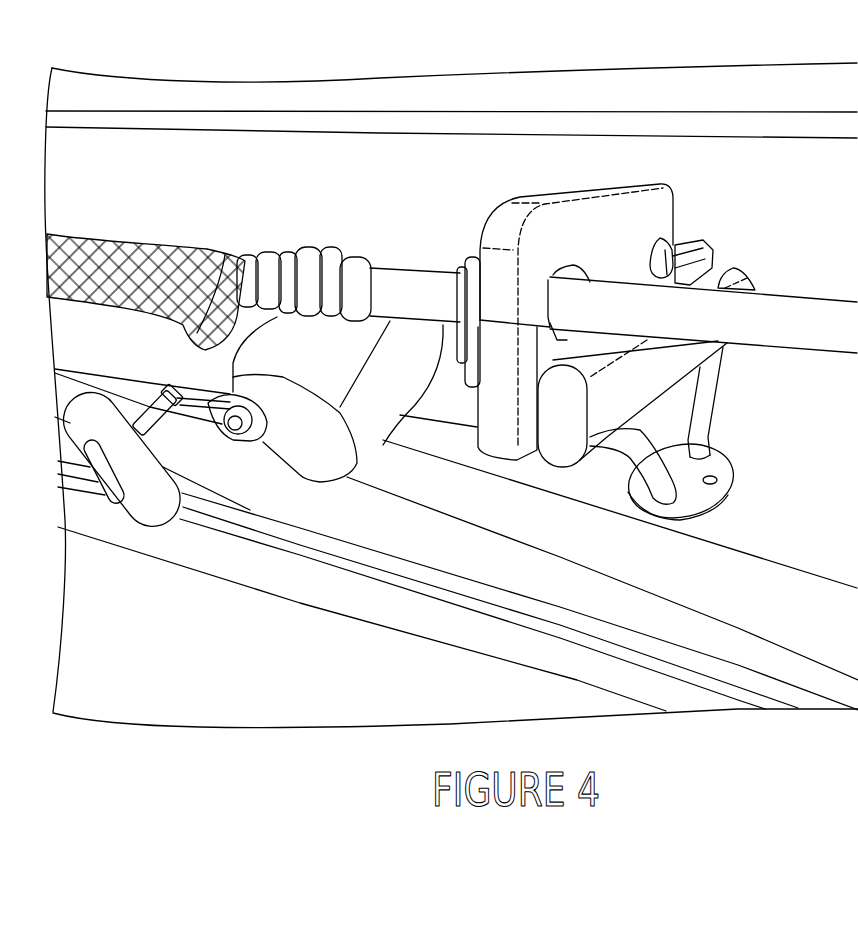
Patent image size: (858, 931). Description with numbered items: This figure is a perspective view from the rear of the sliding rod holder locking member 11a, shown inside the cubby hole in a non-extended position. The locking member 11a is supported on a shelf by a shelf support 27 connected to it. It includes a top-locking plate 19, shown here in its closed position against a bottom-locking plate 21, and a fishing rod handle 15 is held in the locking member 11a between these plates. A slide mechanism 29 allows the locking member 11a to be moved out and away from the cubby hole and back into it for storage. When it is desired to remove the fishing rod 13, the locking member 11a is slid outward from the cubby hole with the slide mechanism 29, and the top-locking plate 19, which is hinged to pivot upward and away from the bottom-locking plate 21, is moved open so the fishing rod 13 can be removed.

The sliding rod holder locking member 11a is at (420, 175).
The fishing rod 13 is at (168, 252).
The fishing rod handle 15 is at (792, 333).
The top-locking plate 19 is at (633, 183).
The bottom-locking plate 21 is at (712, 260).
The shelf support 27 is at (703, 423).
The slide mechanism 29 is at (760, 273).